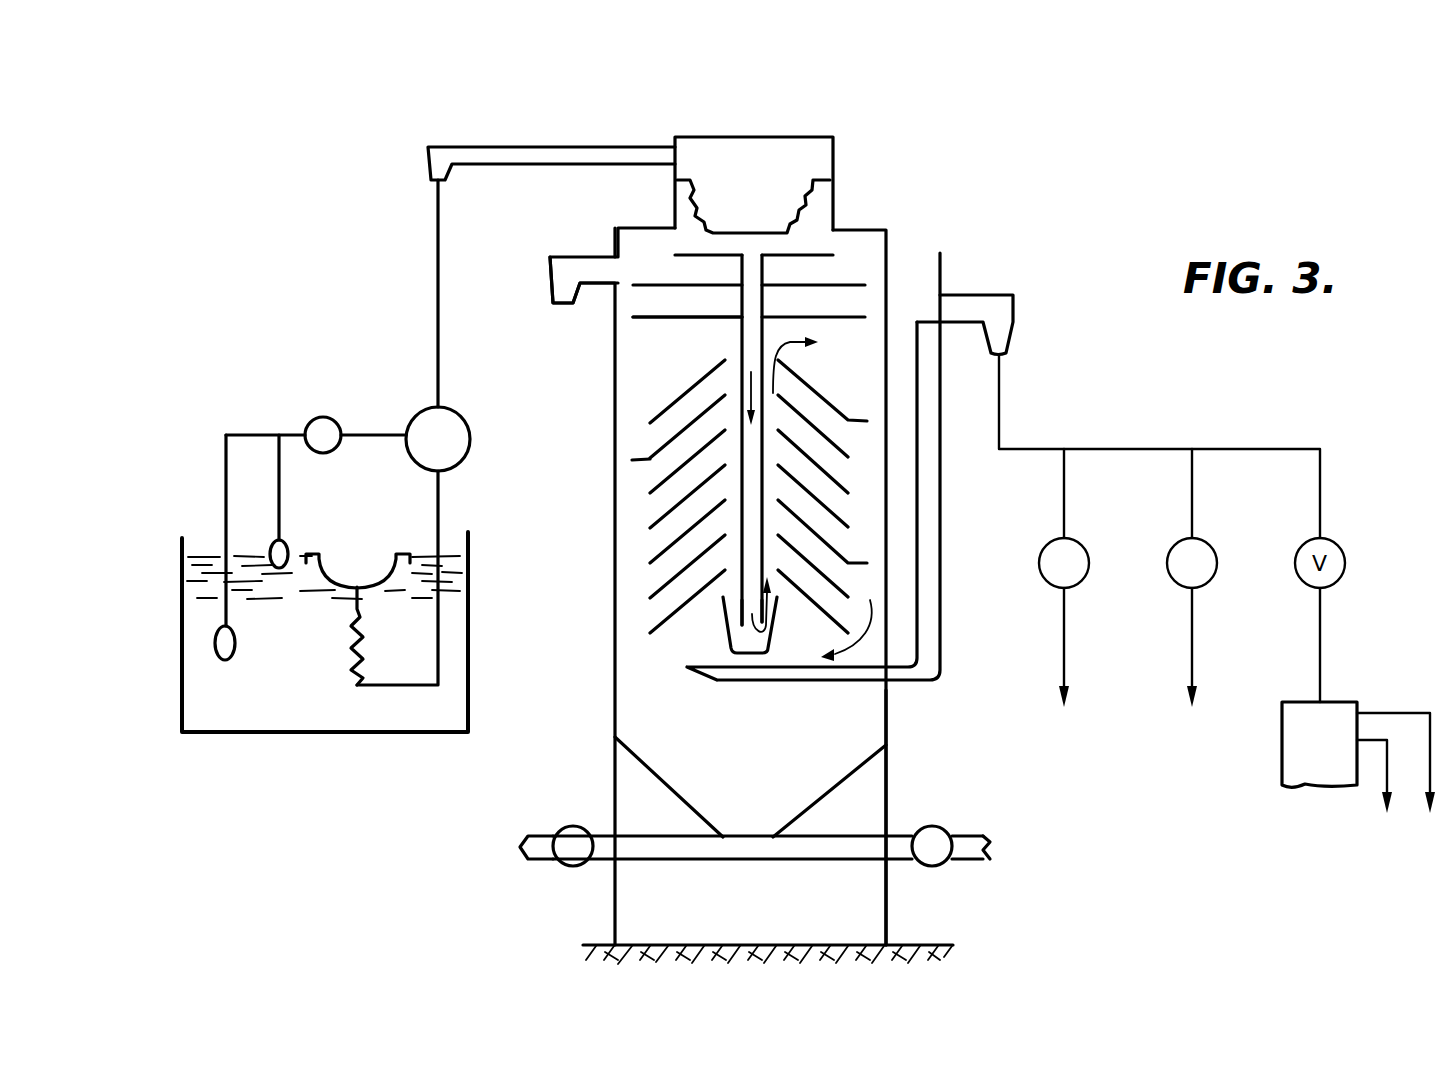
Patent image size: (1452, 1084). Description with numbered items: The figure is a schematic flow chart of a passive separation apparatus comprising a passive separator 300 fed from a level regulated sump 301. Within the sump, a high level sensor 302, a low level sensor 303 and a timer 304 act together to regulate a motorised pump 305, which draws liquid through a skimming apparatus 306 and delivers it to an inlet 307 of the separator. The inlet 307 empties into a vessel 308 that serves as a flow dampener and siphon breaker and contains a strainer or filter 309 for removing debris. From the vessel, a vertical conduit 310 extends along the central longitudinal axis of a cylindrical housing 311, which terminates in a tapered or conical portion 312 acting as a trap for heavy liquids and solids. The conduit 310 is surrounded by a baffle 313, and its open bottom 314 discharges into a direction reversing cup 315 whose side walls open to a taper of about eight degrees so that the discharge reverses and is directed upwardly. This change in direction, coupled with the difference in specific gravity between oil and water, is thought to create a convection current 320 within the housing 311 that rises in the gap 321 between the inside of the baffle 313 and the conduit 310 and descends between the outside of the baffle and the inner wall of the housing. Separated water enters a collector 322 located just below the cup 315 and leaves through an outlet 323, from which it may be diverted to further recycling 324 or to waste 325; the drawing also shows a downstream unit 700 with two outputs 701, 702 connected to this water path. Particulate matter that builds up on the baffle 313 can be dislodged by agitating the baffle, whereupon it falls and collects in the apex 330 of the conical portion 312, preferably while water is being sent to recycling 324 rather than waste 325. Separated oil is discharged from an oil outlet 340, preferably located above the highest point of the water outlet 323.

The passive separator 300 is at (898, 245).
The level regulated sump 301 is at (204, 530).
The high level sensor 302 is at (283, 546).
The low level sensor 303 is at (235, 644).
The timer 304 is at (323, 432).
The motorised pump 305 is at (470, 438).
The skimming apparatus 306 is at (345, 657).
The inlet 307 is at (505, 158).
The vessel 308 is at (833, 163).
The strainer or filter 309 is at (833, 207).
The vertical conduit 310 is at (738, 322).
The cylindrical housing 311 is at (886, 710).
The conical portion 312 is at (813, 770).
The baffle 313 is at (672, 437).
The bottom of the conduit 314 is at (747, 592).
The direction reversing cup 315 is at (727, 628).
The convection current 320 is at (783, 350).
The gap 321 is at (768, 463).
The collector 322 is at (752, 674).
The outlet 323 is at (965, 305).
The recycling 324 is at (1066, 655).
The waste 325 is at (1193, 655).
The apex 330 is at (753, 813).
The oil outlet 340 is at (580, 270).
The control unit 700 is at (1322, 750).
The output 701 is at (1381, 782).
The output 702 is at (1420, 782).